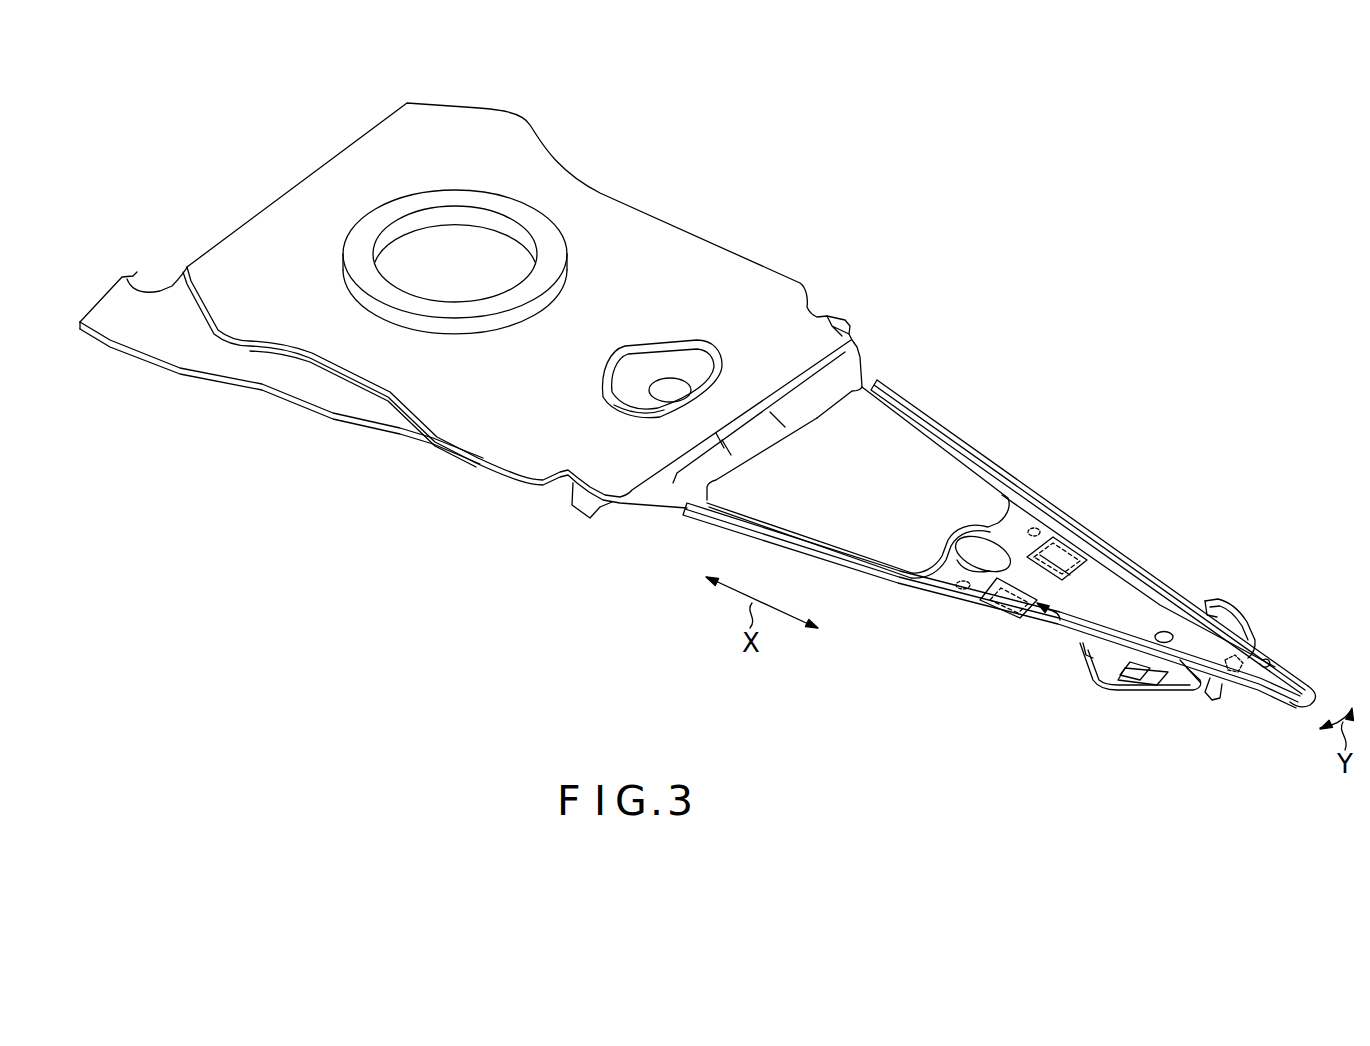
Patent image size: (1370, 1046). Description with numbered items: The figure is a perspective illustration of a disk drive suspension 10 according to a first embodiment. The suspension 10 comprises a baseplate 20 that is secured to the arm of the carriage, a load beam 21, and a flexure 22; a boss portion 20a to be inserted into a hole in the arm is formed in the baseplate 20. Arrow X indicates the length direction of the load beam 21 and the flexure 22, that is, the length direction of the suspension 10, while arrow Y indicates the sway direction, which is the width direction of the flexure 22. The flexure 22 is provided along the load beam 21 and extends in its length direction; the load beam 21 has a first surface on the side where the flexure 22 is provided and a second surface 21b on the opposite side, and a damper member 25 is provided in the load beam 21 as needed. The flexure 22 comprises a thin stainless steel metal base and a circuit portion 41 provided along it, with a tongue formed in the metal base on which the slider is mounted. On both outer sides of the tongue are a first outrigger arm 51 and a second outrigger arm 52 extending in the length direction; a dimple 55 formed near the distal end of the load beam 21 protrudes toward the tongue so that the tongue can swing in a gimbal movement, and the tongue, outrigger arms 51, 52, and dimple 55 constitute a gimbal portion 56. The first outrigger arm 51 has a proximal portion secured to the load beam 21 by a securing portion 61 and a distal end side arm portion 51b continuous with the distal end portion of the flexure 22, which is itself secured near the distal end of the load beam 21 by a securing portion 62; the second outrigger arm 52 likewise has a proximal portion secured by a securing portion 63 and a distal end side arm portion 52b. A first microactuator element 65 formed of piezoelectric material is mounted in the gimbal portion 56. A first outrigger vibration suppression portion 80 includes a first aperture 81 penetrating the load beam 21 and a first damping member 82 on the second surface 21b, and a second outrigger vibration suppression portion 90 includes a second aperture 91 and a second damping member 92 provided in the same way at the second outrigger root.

The suspension 10 is at (931, 183).
The baseplate 20 is at (641, 237).
The boss portion 20a is at (536, 225).
The load beam 21 is at (993, 462).
The second surface 21b is at (1105, 620).
The flexure 22 is at (1173, 585).
The damper member 25 is at (913, 470).
The circuit portion 41 is at (373, 425).
The first outrigger arm 51 is at (1047, 650).
The distal end side arm portion 51b is at (1175, 702).
The second outrigger arm 52 is at (1165, 630).
The distal end side arm portion 52b is at (1230, 608).
The dimple 55 is at (1213, 603).
The gimbal portion 56 is at (1085, 697).
The securing portion 61 is at (930, 596).
The securing portion 62 is at (1236, 658).
The securing portion 63 is at (1047, 497).
The first microactuator element 65 is at (1138, 688).
The first outrigger vibration suppression portion 80 is at (1048, 622).
The first aperture 81 is at (992, 622).
The first damping member 82 is at (987, 598).
The second outrigger vibration suppression portion 90 is at (1058, 545).
The second aperture 91 is at (1093, 545).
The second damping member 92 is at (1053, 557).